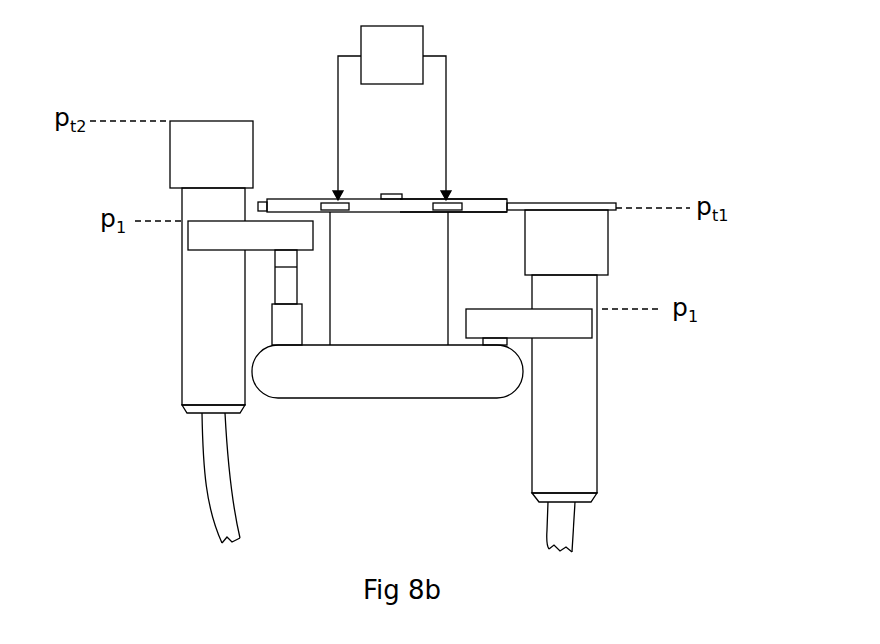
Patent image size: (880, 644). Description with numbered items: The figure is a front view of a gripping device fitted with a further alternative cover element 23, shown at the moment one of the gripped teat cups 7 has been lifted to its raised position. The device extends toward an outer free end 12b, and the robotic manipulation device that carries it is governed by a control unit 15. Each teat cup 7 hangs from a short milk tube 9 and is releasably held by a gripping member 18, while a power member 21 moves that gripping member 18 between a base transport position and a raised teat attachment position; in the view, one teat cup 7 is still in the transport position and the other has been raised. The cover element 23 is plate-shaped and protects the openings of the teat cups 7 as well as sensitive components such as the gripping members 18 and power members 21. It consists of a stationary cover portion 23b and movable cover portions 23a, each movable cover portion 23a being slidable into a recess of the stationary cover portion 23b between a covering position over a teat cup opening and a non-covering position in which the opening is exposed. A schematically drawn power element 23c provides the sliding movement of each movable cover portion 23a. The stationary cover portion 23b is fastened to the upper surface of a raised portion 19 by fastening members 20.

The teat cup 7 is at (212, 329).
The short milk tube 9 is at (213, 457).
The outer free end 12b is at (387, 377).
The control unit 15 is at (378, 43).
The gripping member 18 is at (225, 233).
The raised portion 19 is at (410, 320).
The fastening member 20 is at (392, 194).
The power member 21 is at (290, 318).
The cover element 23 is at (313, 204).
The movable cover portion 23a is at (260, 200).
The stationary cover portion 23b is at (485, 207).
The power element 23c is at (340, 212).